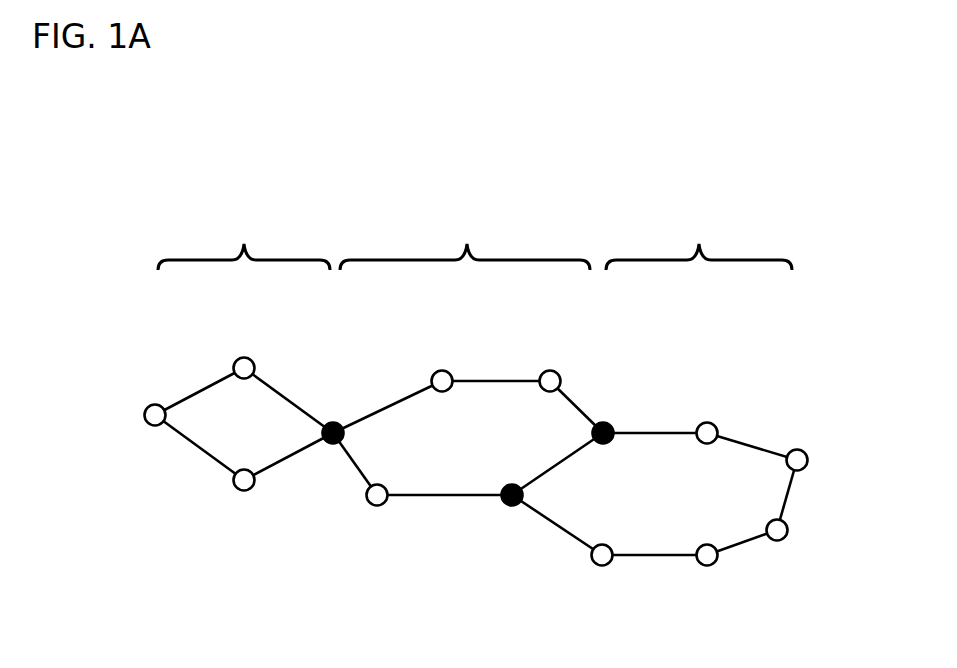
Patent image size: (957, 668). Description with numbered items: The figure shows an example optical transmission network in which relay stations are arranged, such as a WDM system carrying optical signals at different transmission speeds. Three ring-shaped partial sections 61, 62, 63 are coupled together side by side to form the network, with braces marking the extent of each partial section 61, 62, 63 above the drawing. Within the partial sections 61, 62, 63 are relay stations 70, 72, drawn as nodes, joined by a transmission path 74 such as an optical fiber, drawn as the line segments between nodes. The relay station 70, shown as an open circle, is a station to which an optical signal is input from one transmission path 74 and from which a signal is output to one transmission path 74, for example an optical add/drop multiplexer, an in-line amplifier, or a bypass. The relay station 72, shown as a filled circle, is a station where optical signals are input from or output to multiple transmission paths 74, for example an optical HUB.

The partial section 61 is at (244, 235).
The partial section 62 is at (465, 235).
The partial section 63 is at (699, 235).
The relay station 70 is at (247, 358).
The relay station 72 is at (334, 422).
The transmission path 74 is at (287, 398).